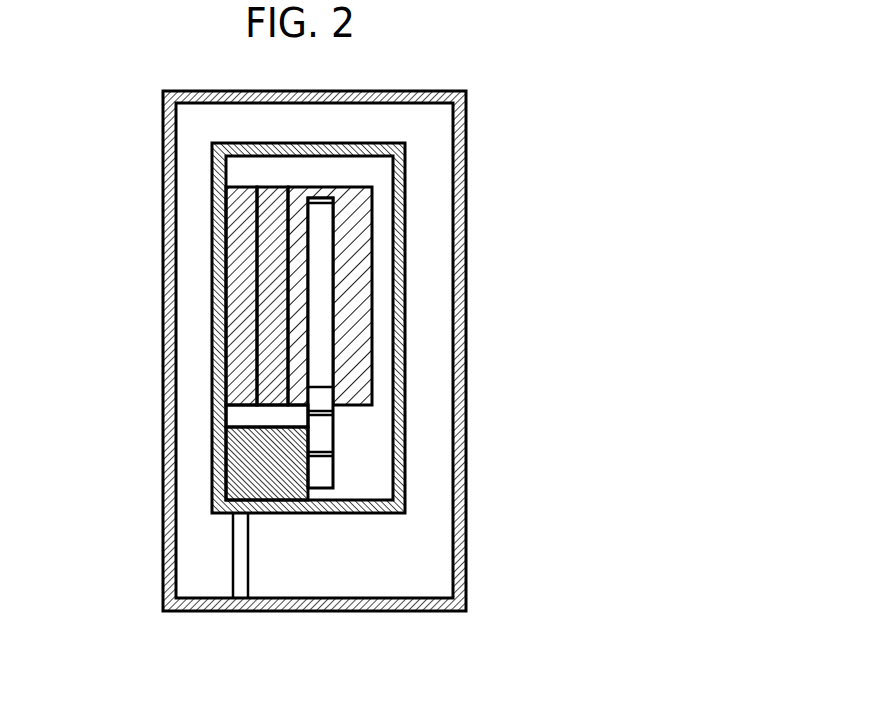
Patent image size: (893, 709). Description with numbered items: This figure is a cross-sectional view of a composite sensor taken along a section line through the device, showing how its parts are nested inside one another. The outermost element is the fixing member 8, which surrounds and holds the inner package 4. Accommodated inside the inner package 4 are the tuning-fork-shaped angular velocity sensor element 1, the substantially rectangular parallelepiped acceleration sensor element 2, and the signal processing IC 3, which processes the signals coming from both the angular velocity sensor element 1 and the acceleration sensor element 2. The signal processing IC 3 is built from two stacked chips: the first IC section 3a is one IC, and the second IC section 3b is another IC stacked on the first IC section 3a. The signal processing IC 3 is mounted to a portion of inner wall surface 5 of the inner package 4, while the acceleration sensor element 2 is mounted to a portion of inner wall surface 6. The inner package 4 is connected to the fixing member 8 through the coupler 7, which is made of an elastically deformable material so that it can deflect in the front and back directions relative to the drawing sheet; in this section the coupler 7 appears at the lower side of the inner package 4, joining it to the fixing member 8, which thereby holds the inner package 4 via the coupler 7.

The angular velocity sensor element 1 is at (337, 352).
The acceleration sensor element 2 is at (357, 230).
The signal processing IC 3 is at (172, 285).
The first IC section 3a is at (238, 218).
The second IC section 3b is at (262, 280).
The inner package 4 is at (405, 303).
The inner wall surface 5 is at (226, 416).
The inner wall surface 6 is at (310, 496).
The coupler 7 is at (240, 558).
The fixing member 8 is at (465, 520).